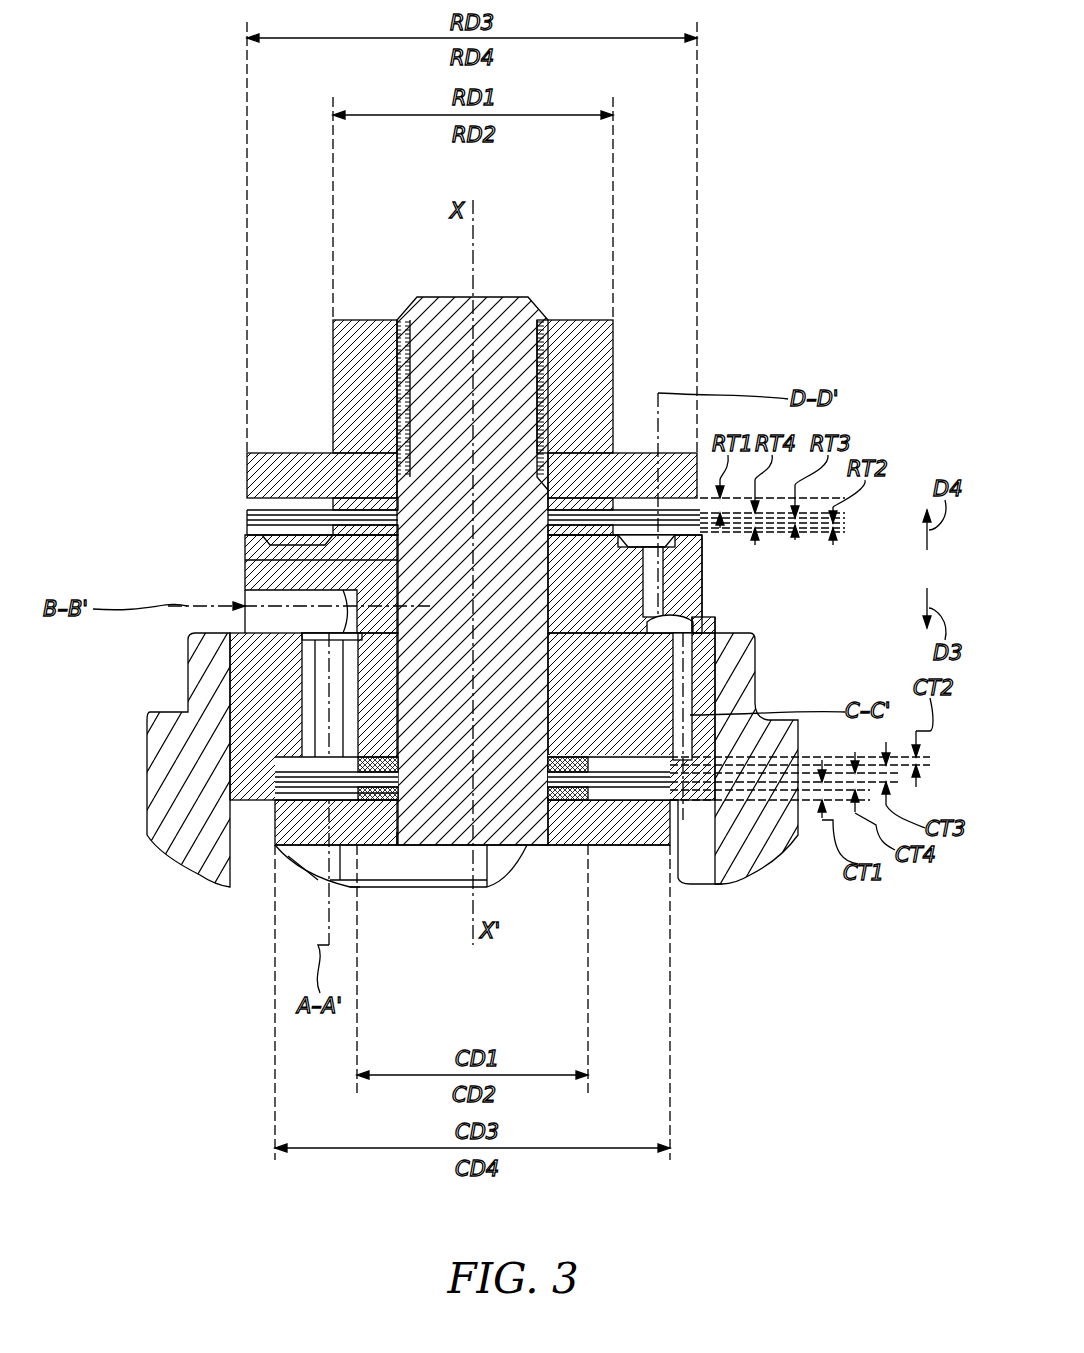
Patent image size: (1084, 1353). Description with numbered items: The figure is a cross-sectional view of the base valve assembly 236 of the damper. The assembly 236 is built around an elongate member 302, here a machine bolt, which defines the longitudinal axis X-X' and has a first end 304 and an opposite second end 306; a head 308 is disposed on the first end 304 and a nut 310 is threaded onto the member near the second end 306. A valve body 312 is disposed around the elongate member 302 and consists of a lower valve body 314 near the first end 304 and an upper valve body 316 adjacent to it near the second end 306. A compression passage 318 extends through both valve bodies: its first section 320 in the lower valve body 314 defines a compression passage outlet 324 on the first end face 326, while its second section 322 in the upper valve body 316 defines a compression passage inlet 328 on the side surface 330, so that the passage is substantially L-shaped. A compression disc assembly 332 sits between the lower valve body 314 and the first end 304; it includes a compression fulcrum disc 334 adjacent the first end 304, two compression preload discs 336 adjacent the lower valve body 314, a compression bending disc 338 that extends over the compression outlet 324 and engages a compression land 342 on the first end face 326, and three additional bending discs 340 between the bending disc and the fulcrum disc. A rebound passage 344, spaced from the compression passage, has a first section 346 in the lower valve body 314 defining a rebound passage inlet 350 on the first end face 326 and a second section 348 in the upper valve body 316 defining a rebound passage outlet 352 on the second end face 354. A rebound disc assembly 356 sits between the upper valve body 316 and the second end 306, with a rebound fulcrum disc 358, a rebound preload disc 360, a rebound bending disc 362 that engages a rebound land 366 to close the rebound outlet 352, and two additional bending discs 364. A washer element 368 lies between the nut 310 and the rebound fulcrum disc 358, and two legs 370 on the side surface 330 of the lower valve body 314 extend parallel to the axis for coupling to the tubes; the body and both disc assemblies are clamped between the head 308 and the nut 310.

The assembly 236 is at (175, 268).
The elongate member 302 is at (500, 305).
The first end 304 is at (620, 868).
The second end 306 is at (630, 312).
The head 308 is at (548, 846).
The nut 310 is at (568, 320).
The valve body 312 is at (730, 608).
The lower valve body 314 is at (707, 663).
The upper valve body 316 is at (683, 585).
The compression passage 318 is at (298, 676).
The first section 320 is at (308, 697).
The second section 322 is at (233, 580).
The compression passage outlet 324 is at (300, 765).
The first end face 326 is at (345, 783).
The compression passage inlet 328 is at (230, 630).
The side surface 330 is at (245, 558).
The compression disc assembly 332 is at (305, 873).
The compression fulcrum disc 334 is at (398, 832).
The compression preload disc 336 is at (300, 752).
The compression bending disc 338 is at (350, 793).
The additional bending discs 340 is at (350, 886).
The compression land 342 is at (358, 766).
The rebound passage 344 is at (705, 640).
The first section 346 is at (700, 675).
The second section 348 is at (700, 615).
The rebound passage inlet 350 is at (704, 757).
The rebound passage outlet 352 is at (680, 536).
The second end face 354 is at (247, 490).
The rebound disc assembly 356 is at (240, 496).
The rebound fulcrum disc 358 is at (350, 470).
The rebound preload disc 360 is at (245, 566).
The rebound bending disc 362 is at (247, 520).
The additional bending discs 364 is at (247, 512).
The rebound land 366 is at (247, 472).
The washer element 368 is at (280, 470).
The legs 370 is at (173, 843).